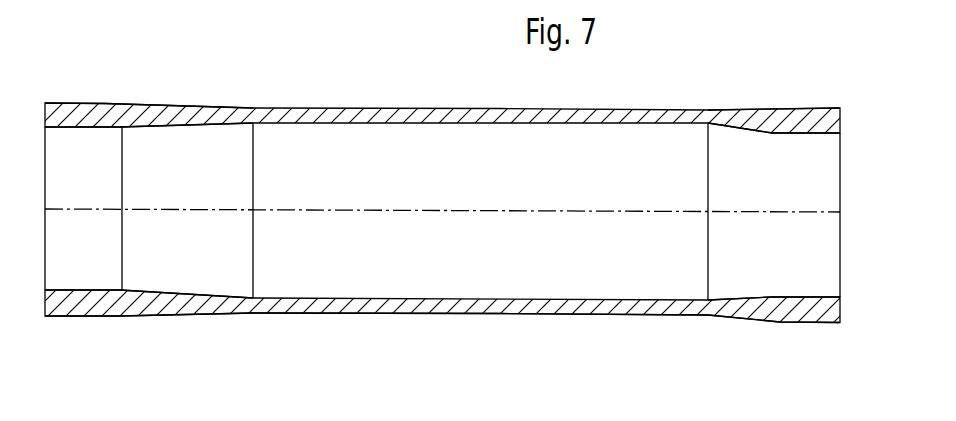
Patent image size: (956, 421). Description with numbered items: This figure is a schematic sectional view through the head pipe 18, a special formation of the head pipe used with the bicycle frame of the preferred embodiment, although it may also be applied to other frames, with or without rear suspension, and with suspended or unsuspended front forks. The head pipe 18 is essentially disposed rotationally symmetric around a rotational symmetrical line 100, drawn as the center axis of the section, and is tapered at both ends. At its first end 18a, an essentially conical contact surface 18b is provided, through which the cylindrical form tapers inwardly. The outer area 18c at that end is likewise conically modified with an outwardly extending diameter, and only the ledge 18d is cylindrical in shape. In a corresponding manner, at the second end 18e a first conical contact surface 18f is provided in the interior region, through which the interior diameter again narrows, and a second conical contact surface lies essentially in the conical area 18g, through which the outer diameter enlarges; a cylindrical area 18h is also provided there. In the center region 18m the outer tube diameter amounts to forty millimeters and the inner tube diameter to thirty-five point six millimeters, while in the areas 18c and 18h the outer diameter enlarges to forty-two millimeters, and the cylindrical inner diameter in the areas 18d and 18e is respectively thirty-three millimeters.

The head pipe 18 is at (341, 102).
The first end 18a is at (792, 318).
The conical contact surface 18b is at (755, 296).
The outer area 18c is at (755, 107).
The ledge 18d is at (800, 135).
The second end 18e is at (90, 317).
The first conical contact surface 18f is at (174, 289).
The conical area 18g is at (172, 104).
The cylindrical area 18h is at (83, 130).
The center region 18m is at (440, 315).
The rotational symmetrical line 100 is at (428, 214).